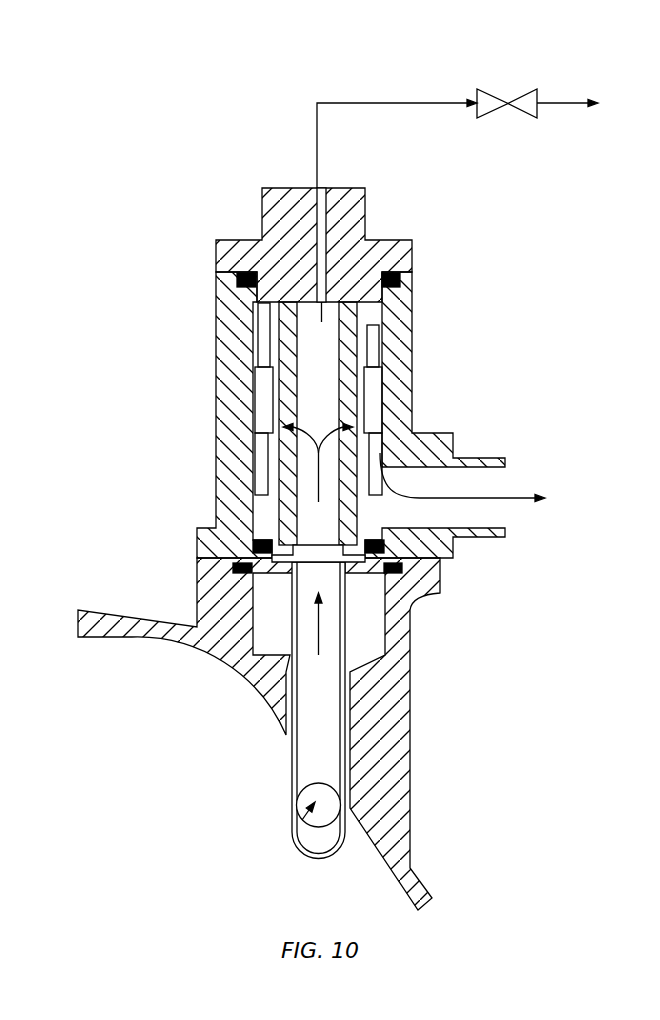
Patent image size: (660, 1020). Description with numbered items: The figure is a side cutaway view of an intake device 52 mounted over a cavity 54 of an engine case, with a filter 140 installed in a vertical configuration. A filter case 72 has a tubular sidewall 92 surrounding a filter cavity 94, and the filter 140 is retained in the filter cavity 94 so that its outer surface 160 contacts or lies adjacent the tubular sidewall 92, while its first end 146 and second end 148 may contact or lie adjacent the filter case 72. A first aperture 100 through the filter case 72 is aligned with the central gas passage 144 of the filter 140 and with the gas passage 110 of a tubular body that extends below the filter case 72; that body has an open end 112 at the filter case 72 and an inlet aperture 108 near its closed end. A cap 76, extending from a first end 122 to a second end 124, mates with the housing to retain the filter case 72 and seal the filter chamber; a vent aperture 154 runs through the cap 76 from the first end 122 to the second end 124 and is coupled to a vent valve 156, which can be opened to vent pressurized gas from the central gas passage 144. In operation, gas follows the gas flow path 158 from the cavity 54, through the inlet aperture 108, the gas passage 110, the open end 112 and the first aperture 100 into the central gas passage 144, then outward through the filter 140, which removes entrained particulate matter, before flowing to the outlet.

The intake device 52 is at (245, 88).
The cavity 54 is at (131, 777).
The filter case 72 is at (272, 323).
The cap 76 is at (345, 217).
The tubular sidewall 92 is at (360, 432).
The filter cavity 94 is at (267, 452).
The first aperture 100 is at (260, 512).
The inlet aperture 108 is at (299, 790).
The gas passage 110 is at (301, 694).
The open end 112 is at (318, 568).
The first end 122 is at (347, 187).
The second end 124 is at (383, 325).
The filter 140 is at (377, 357).
The central gas passage 144 is at (301, 392).
The first end 146 is at (290, 303).
The second end 148 is at (305, 508).
The vent aperture 154 is at (345, 262).
The vent valve 156 is at (523, 92).
The gas flow path 158 is at (390, 450).
The outer surface 160 is at (380, 403).